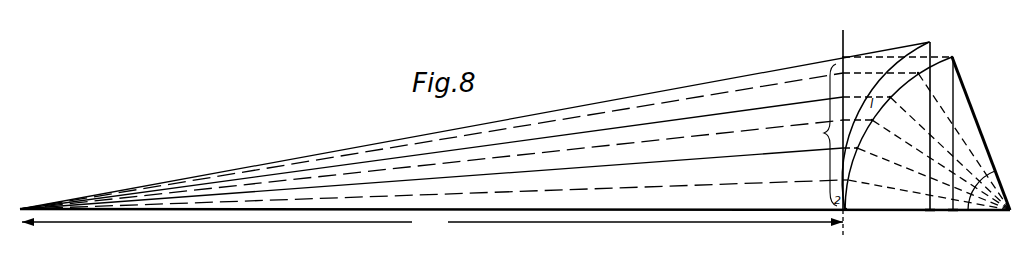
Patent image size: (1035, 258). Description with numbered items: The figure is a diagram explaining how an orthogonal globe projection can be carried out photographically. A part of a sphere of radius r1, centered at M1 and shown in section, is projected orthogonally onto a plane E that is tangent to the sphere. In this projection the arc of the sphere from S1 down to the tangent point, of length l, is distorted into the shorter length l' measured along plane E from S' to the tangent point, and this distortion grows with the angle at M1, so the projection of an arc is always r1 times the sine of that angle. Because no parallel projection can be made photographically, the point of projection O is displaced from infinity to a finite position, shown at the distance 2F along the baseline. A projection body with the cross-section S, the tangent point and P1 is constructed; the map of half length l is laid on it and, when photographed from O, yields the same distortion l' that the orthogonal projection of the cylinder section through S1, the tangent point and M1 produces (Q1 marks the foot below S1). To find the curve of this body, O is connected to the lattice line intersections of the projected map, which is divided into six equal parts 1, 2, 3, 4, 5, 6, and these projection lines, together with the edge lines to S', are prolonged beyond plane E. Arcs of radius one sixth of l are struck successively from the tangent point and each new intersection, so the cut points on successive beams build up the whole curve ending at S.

The point of projection O is at (508, 207).
The projection plane E is at (845, 124).
The end point of the projection body curve S is at (927, 116).
The projected edge point on plane E S' is at (835, 48).
The edge point of the sphere arc S1 is at (962, 124).
The base corner of the projection body cross-section P1 is at (928, 223).
The foot of perpendicular from S1 Q1 is at (954, 223).
The center of the sphere or cylinder section M1 is at (934, 154).
The radius of the sphere r1 is at (981, 133).
The distorted projected length l' is at (821, 135).
The distance twice focal length 2F is at (432, 223).
The first map division point 1 is at (850, 201).
The second map division point 2 is at (855, 159).
The third map division point 3 is at (868, 130).
The fourth map division point 4 is at (888, 106).
The fifth map division point 5 is at (916, 82).
The sixth map division point 6 is at (945, 65).